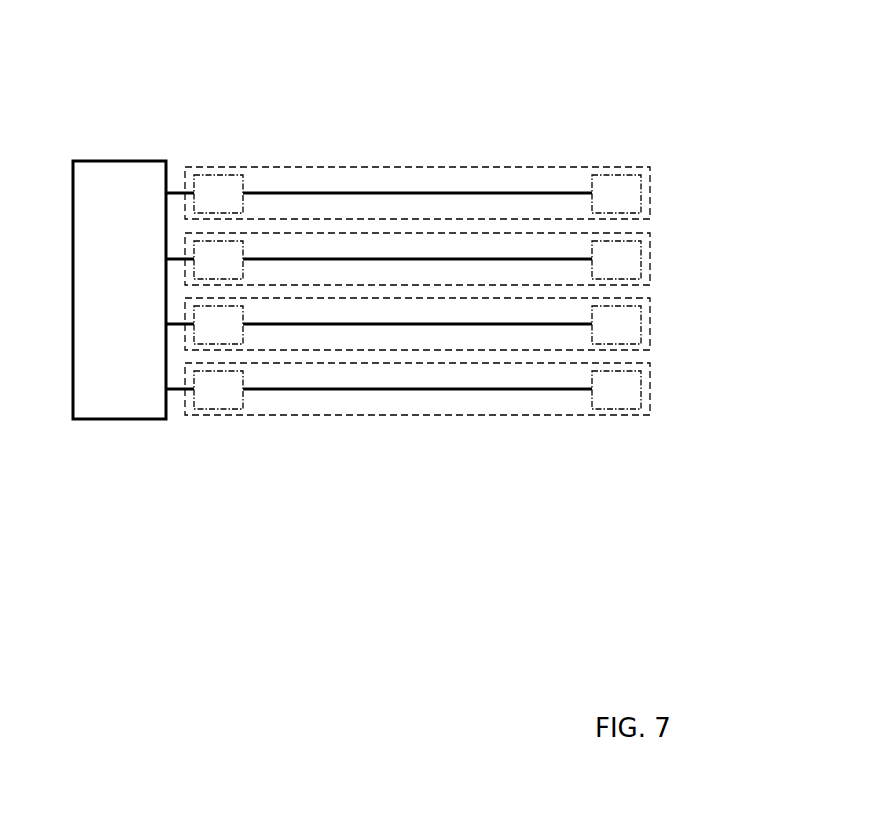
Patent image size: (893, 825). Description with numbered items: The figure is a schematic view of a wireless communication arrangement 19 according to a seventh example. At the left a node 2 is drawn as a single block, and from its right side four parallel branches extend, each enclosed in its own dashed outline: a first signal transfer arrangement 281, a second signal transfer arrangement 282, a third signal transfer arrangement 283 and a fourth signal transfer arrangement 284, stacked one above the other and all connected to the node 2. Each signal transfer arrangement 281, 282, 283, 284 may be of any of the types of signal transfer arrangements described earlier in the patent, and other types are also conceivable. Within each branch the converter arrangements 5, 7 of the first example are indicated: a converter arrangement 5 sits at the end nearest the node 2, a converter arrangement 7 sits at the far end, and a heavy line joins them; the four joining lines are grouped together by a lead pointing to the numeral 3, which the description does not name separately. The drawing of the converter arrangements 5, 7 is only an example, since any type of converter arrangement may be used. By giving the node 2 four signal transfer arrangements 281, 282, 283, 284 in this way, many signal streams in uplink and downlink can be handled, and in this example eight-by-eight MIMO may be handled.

The wireless communication arrangement 19 is at (410, 70).
The node 2 is at (111, 311).
The lines 3 is at (377, 193).
The converter arrangement 5 is at (210, 206).
The converter arrangement 7 is at (608, 206).
The first signal transfer arrangement 281 is at (650, 207).
The second signal transfer arrangement 282 is at (650, 273).
The third signal transfer arrangement 283 is at (650, 338).
The fourth signal transfer arrangement 284 is at (650, 403).